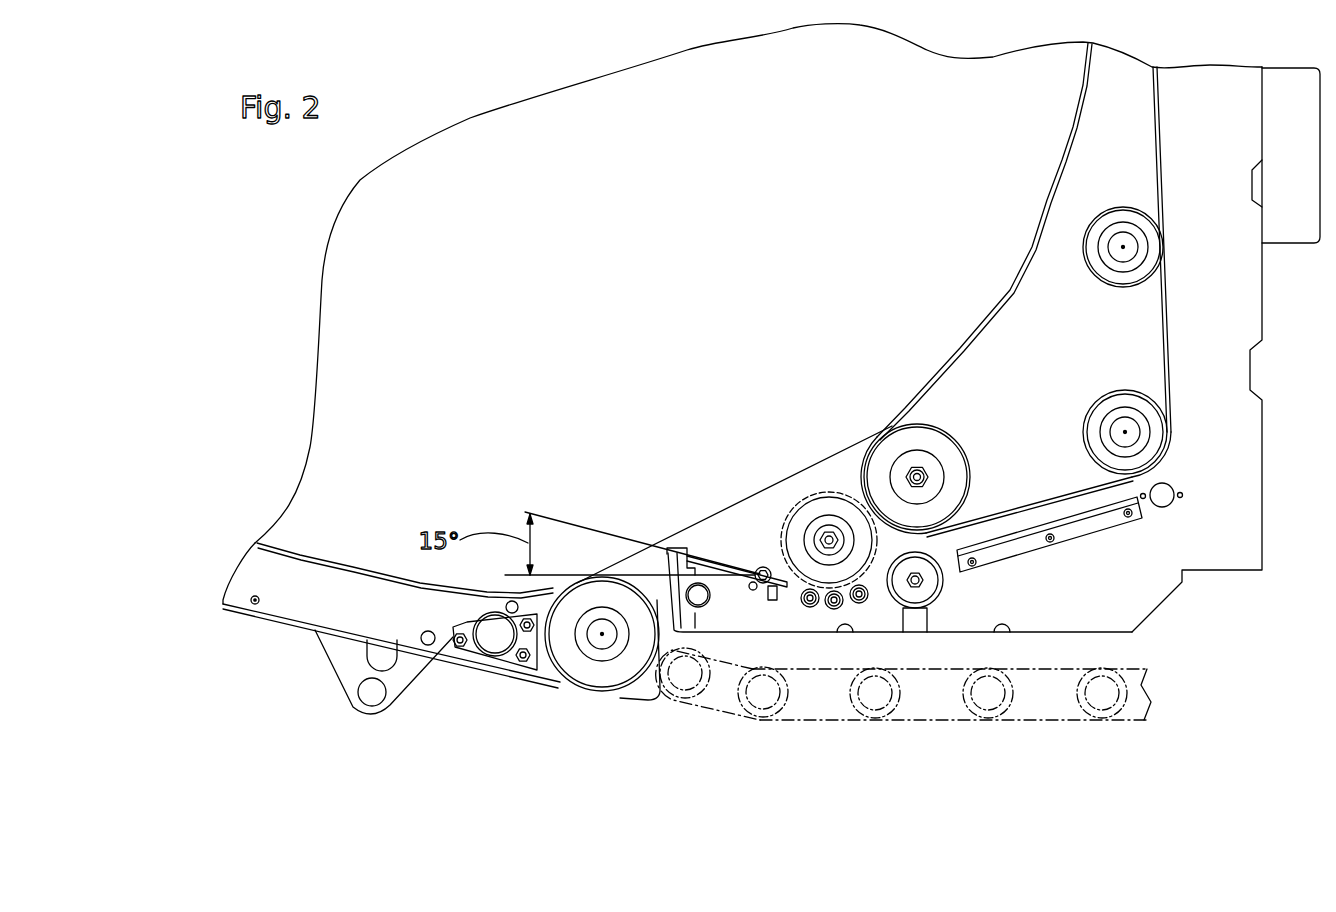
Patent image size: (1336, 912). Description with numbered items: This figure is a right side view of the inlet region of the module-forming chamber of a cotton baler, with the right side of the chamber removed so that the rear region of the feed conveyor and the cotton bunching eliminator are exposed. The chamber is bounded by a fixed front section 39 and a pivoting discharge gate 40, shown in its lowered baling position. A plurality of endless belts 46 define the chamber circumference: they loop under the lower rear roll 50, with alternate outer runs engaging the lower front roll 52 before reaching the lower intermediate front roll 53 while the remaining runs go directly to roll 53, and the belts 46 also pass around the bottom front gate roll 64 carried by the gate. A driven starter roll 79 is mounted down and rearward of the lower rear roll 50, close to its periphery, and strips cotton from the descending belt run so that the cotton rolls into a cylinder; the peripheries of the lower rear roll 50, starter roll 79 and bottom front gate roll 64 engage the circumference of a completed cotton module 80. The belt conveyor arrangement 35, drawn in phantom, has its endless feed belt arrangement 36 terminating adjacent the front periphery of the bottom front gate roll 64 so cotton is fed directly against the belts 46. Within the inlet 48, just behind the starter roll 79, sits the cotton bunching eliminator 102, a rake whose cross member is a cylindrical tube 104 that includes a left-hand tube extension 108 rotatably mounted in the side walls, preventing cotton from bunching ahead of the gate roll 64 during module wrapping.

The completed cotton module 80 is at (680, 260).
The fixed front section 39 is at (1200, 575).
The endless belts 46 is at (1020, 282).
The lower intermediate front roll 53 is at (1123, 208).
The lower front roll 52 is at (1116, 400).
The lower rear roll 50 is at (950, 448).
The starter roll 79 is at (816, 496).
The bottom front gate roll 64 is at (592, 675).
The discharge gate 40 is at (420, 668).
The inlet 48 is at (723, 605).
The cylindrical tube 104 is at (757, 567).
The cotton bunching eliminator 102 is at (764, 551).
The tube extension 108 is at (703, 548).
The endless feed belt arrangement 36 is at (1023, 667).
The belt conveyor arrangement 35 is at (1037, 728).